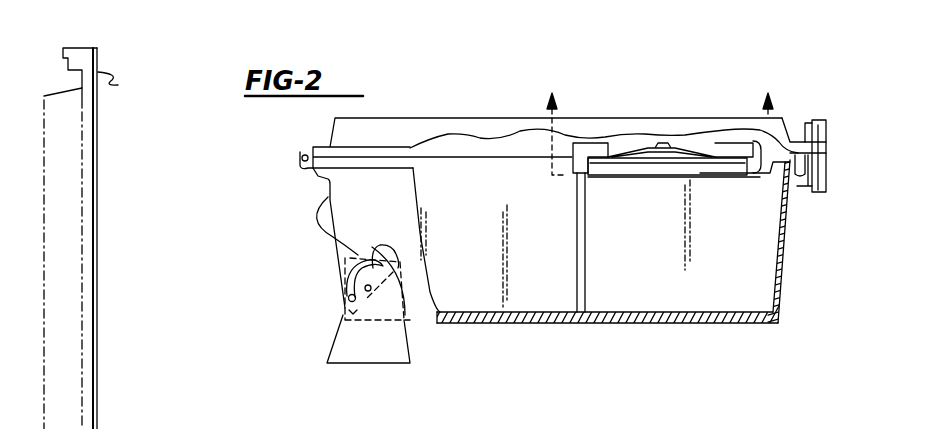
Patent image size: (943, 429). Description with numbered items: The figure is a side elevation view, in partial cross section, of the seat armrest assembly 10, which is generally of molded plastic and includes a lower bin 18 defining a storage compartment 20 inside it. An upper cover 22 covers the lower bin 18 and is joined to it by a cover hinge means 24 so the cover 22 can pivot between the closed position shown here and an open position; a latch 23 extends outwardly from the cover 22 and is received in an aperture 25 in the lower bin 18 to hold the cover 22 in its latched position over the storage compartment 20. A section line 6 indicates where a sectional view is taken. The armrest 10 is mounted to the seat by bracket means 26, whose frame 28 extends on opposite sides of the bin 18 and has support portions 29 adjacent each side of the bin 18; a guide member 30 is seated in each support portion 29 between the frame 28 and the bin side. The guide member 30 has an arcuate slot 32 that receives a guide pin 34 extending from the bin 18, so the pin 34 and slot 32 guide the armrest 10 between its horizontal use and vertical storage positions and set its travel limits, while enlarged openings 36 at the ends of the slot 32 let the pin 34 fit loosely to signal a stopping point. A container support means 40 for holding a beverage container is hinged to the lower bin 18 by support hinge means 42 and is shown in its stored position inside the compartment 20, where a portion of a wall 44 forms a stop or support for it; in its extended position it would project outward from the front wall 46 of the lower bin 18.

The section line 6- 6 is at (660, 121).
The seat armrest assembly 10 is at (662, 99).
The lower bin 18 is at (752, 324).
The storage compartment 20 is at (650, 300).
The upper cover 22 is at (65, 266).
The latch 23 is at (108, 72).
The cover hinge means 24 is at (301, 156).
The aperture 25 is at (807, 150).
The bracket means 26 is at (318, 378).
The frame 28 is at (368, 353).
The support portions 29 is at (322, 212).
The guide member 30 is at (372, 300).
The arcuate slot 32 is at (362, 265).
The guide pin 34 is at (385, 258).
The enlarged openings 36 is at (349, 298).
The container support means 40 is at (640, 188).
The support hinge means 42 is at (766, 190).
The wall 44 is at (577, 230).
The front wall 46 is at (785, 270).